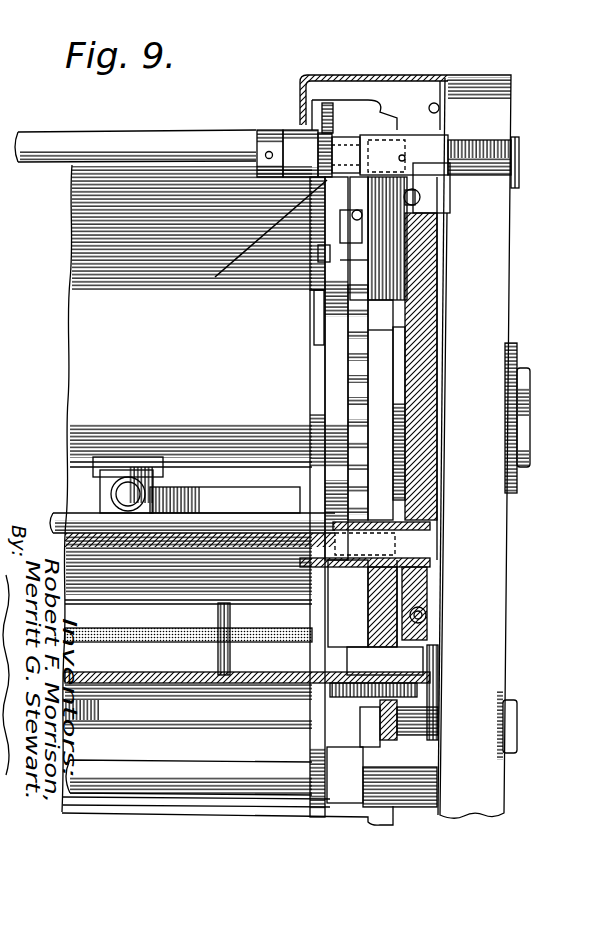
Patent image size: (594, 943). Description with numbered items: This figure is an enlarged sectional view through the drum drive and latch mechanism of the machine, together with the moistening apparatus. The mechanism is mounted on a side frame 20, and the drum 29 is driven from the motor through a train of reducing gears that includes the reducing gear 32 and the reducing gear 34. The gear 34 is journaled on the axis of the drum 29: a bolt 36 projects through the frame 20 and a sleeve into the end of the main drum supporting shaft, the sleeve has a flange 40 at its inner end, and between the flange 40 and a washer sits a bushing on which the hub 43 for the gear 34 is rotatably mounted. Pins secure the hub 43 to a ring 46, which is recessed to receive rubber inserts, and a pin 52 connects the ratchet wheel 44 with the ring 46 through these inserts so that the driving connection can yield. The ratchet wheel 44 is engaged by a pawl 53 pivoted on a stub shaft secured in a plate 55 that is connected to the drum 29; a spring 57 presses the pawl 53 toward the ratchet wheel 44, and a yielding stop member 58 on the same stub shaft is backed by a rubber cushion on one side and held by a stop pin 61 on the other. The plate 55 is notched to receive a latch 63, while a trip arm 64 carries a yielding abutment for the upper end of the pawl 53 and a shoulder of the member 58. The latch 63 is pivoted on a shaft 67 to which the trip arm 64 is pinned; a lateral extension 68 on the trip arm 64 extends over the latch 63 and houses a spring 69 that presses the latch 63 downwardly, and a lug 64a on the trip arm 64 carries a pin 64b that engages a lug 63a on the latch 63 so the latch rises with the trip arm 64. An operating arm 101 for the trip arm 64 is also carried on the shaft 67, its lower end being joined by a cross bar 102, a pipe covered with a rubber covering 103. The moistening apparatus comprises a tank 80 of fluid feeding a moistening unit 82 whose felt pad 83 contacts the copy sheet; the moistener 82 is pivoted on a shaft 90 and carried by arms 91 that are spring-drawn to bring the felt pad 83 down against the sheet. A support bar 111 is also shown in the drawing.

The side frame 20 is at (500, 103).
The drum 29 is at (83, 277).
The reducing gear 32 is at (370, 578).
The reducing gear 34 is at (438, 323).
The bolt 36 is at (525, 438).
The flange 40 is at (317, 408).
The hub 43 is at (397, 353).
The ratchet wheel 44 is at (357, 357).
The ring 46 is at (335, 388).
The pin 52 is at (318, 322).
The pawl 53 is at (360, 267).
The plate 55 is at (312, 232).
The spring 57 is at (362, 217).
The yielding stop member 58 is at (323, 253).
The stop pin 61 is at (342, 210).
The latch 63 is at (327, 140).
The lug 63a is at (266, 234).
The trip arm 64 is at (376, 112).
The lug 64a is at (365, 135).
The pin 64b is at (258, 145).
The shaft 67 is at (135, 142).
The lateral extension 68 is at (313, 102).
The spring 69 is at (325, 123).
The tank 80 is at (397, 237).
The moistening unit 82 is at (76, 496).
The felt pad 83 is at (262, 630).
The shaft 90 is at (170, 772).
The arm 91 is at (322, 630).
The operating arm 101 is at (440, 295).
The cross bar 102 is at (53, 543).
The rubber covering 103 is at (264, 513).
The support bar 111 is at (143, 658).